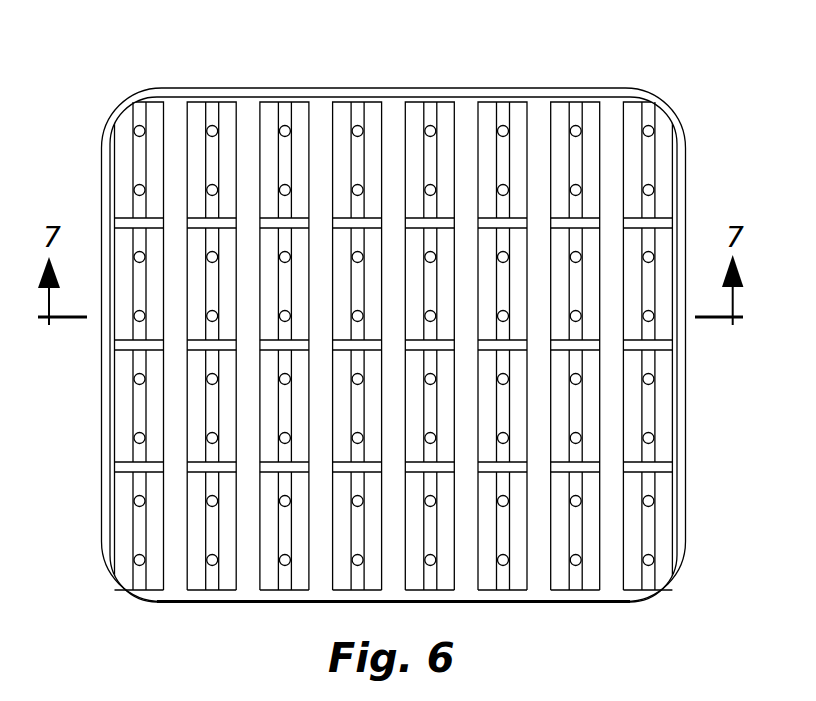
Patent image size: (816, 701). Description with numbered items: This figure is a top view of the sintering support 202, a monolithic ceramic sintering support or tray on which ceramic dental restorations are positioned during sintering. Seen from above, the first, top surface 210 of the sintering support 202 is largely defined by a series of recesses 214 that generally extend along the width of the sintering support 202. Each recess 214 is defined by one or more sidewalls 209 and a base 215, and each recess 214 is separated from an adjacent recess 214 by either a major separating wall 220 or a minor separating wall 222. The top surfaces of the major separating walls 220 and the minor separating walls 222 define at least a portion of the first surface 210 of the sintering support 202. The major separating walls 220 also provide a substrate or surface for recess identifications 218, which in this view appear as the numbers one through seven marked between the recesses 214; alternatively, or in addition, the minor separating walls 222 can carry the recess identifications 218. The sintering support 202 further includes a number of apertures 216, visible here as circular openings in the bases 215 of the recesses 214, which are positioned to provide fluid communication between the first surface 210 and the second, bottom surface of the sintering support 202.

The sintering support 202 is at (663, 75).
The sidewall 209 is at (153, 578).
The first surface 210 is at (102, 511).
The recess 214 is at (426, 103).
The base 215 is at (282, 110).
The aperture 216 is at (653, 192).
The recess identification 218 is at (537, 154).
The major separating wall 220 is at (610, 560).
The minor separating wall 222 is at (125, 460).